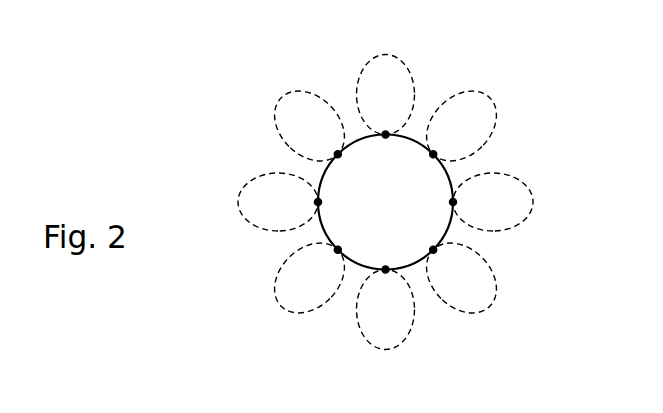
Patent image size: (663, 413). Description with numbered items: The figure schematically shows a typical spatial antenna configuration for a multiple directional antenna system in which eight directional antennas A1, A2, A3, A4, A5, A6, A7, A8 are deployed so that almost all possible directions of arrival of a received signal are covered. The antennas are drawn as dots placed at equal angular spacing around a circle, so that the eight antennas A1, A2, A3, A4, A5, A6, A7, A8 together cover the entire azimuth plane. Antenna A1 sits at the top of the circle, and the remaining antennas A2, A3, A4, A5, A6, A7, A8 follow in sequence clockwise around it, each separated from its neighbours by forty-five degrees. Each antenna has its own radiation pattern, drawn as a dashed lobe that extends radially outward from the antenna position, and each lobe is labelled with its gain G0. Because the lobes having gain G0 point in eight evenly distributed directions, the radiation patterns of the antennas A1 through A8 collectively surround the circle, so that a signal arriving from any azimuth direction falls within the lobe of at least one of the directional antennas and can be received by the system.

The gain G0 is at (391, 207).
The directional antenna A1 is at (381, 146).
The directional antenna A2 is at (423, 165).
The directional antenna A3 is at (437, 200).
The directional antenna A4 is at (422, 243).
The directional antenna A5 is at (386, 259).
The directional antenna A6 is at (349, 243).
The directional antenna A7 is at (332, 207).
The directional antenna A8 is at (347, 165).